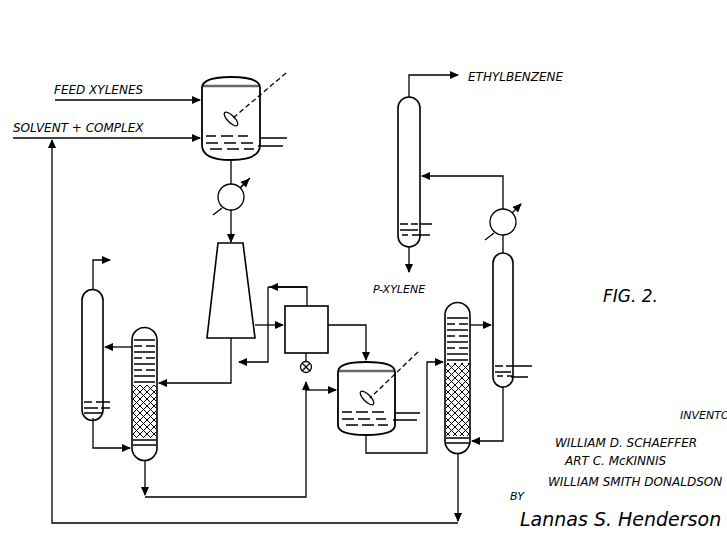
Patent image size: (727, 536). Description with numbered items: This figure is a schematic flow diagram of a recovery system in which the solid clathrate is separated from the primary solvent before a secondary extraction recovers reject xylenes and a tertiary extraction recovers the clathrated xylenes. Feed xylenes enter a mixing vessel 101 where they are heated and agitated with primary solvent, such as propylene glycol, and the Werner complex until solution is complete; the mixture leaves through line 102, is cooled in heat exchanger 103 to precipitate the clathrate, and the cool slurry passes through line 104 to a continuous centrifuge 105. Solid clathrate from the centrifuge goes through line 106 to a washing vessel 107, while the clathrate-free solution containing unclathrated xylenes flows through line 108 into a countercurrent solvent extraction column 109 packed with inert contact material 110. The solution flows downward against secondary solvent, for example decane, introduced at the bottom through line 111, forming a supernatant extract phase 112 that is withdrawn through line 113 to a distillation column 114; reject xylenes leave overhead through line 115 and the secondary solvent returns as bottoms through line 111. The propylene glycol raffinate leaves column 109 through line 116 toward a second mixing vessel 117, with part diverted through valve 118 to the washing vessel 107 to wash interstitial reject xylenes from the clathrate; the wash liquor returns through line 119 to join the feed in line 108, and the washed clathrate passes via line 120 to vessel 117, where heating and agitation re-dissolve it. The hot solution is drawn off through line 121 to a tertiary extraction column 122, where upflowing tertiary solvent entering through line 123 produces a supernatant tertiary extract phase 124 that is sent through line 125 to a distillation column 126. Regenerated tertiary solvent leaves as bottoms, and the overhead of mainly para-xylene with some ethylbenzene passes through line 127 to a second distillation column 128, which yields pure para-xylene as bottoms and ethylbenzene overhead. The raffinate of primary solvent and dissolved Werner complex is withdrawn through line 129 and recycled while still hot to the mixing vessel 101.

The mixing vessel 101 is at (237, 94).
The line 102 is at (230, 170).
The heat exchanger 103 is at (244, 197).
The line 104 is at (234, 224).
The continuous centrifuge 105 is at (231, 272).
The line 106 is at (268, 360).
The washing vessel 107 is at (316, 343).
The line 108 is at (203, 385).
The countercurrent solvent extraction column 109 is at (157, 422).
The inert contact material 110 is at (157, 443).
The line 111 is at (92, 450).
The supernatant extract phase 112 is at (157, 343).
The line 113 is at (118, 347).
The distillation column 114 is at (95, 311).
The line 115 is at (94, 260).
The line 116 is at (230, 497).
The second mixing vessel 117 is at (385, 395).
The valve 118 is at (300, 370).
The line 119 is at (307, 287).
The line 120 is at (366, 338).
The line 121 is at (418, 456).
The tertiary extraction column 122 is at (462, 456).
The line 123 is at (504, 405).
The supernatant tertiary extract phase 124 is at (452, 334).
The line 125 is at (473, 325).
The distillation column 126 is at (505, 330).
The line 127 is at (480, 176).
The second distillation column 128 is at (405, 106).
The line 129 is at (50, 283).